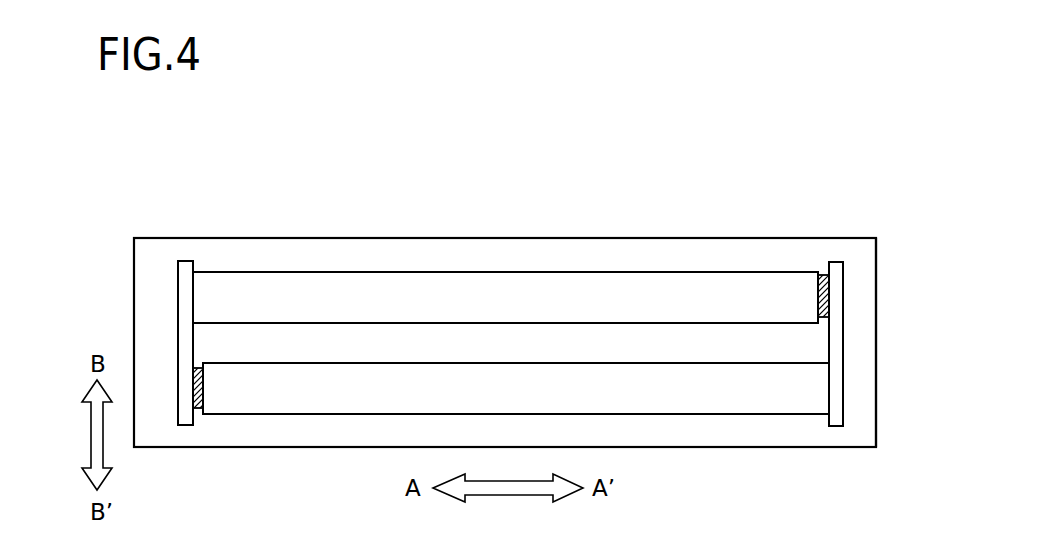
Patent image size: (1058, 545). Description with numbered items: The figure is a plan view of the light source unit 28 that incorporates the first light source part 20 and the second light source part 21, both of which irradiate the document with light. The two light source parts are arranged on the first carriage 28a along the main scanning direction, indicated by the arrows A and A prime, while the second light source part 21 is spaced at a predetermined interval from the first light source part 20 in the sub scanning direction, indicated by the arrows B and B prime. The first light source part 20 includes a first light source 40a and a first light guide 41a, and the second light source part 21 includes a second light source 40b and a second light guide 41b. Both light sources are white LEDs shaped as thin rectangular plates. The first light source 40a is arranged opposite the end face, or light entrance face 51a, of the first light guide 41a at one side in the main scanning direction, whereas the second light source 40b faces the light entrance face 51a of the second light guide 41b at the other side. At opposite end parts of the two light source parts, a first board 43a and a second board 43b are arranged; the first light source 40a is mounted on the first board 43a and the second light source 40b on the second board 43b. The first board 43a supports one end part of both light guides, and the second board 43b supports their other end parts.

The light source unit 28 is at (264, 204).
The first carriage 28a is at (862, 397).
The first board 43a is at (187, 283).
The second board 43b is at (837, 380).
The second light source part 21 is at (516, 231).
The second light guide 41b is at (735, 287).
The second light source 40b is at (822, 275).
The first light source part 20 is at (511, 454).
The first light guide 41a is at (302, 402).
The first light source 40a is at (215, 434).
The light entrance face 51a is at (205, 390).